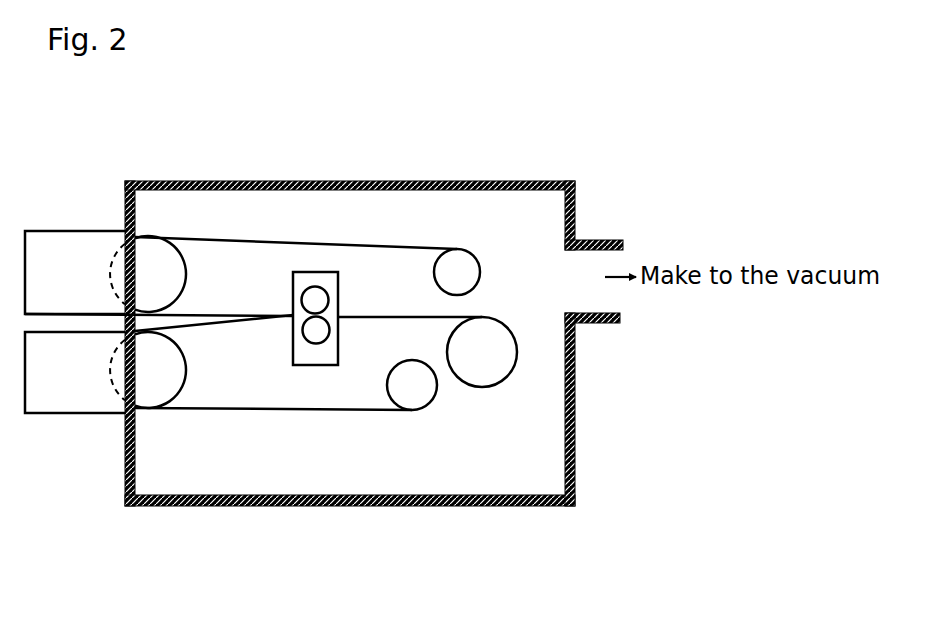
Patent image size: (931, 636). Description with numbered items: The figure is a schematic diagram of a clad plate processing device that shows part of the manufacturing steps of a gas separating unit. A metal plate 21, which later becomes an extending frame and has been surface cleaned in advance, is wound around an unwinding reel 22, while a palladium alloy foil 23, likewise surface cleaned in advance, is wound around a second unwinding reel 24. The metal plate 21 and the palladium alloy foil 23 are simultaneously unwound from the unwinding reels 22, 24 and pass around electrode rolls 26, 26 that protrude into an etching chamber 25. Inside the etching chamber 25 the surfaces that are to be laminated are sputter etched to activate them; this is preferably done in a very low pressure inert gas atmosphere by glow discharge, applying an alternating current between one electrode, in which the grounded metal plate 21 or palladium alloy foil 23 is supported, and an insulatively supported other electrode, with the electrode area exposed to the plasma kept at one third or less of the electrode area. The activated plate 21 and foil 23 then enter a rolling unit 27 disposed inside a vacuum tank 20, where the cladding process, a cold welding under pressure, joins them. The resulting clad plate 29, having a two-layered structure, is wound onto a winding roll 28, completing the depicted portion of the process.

The vacuum tank 20 is at (527, 207).
The metal plate 21 is at (213, 238).
The unwinding reel 22 is at (463, 264).
The palladium alloy foil 23 is at (273, 409).
The unwinding reel 24 is at (413, 402).
The etching chamber 25 is at (65, 248).
The electrode rolls 26 is at (142, 250).
The rolling unit 27 is at (315, 287).
The winding roll 28 is at (490, 362).
The clad plate 29 is at (377, 320).